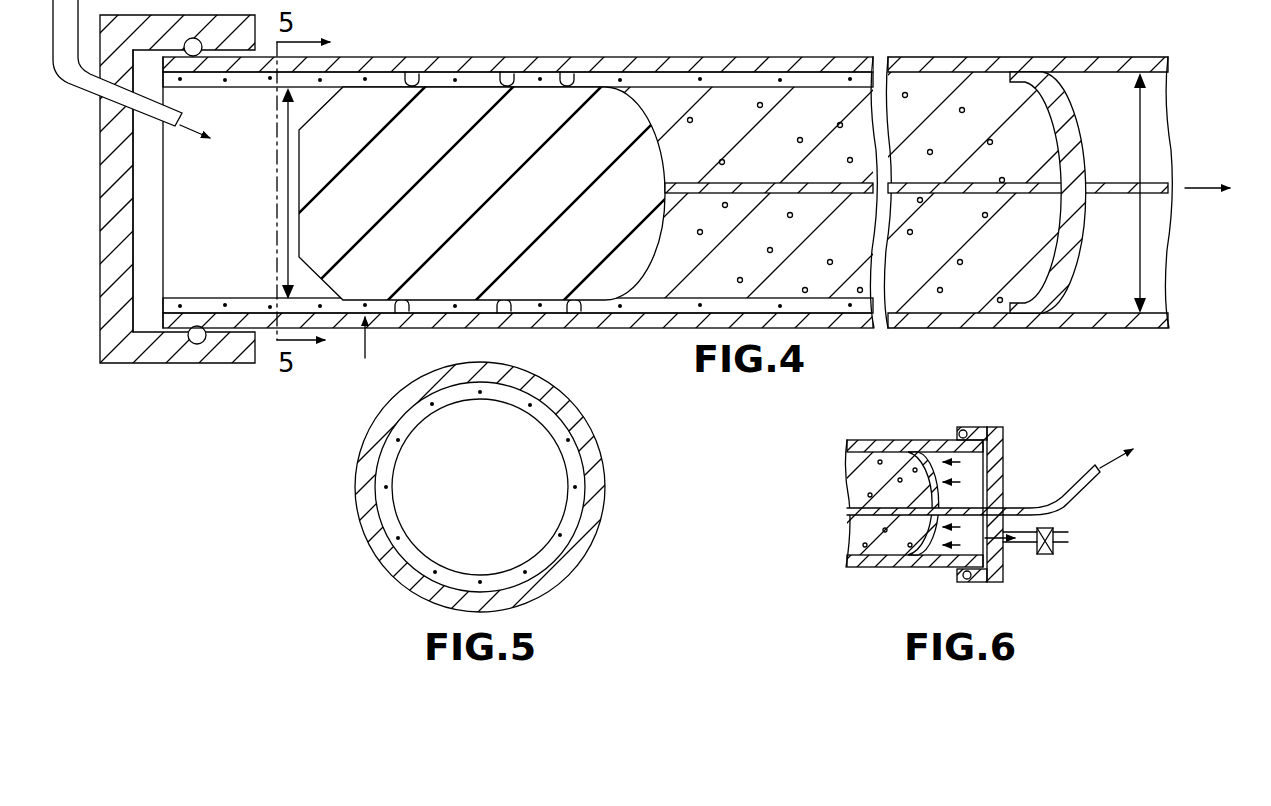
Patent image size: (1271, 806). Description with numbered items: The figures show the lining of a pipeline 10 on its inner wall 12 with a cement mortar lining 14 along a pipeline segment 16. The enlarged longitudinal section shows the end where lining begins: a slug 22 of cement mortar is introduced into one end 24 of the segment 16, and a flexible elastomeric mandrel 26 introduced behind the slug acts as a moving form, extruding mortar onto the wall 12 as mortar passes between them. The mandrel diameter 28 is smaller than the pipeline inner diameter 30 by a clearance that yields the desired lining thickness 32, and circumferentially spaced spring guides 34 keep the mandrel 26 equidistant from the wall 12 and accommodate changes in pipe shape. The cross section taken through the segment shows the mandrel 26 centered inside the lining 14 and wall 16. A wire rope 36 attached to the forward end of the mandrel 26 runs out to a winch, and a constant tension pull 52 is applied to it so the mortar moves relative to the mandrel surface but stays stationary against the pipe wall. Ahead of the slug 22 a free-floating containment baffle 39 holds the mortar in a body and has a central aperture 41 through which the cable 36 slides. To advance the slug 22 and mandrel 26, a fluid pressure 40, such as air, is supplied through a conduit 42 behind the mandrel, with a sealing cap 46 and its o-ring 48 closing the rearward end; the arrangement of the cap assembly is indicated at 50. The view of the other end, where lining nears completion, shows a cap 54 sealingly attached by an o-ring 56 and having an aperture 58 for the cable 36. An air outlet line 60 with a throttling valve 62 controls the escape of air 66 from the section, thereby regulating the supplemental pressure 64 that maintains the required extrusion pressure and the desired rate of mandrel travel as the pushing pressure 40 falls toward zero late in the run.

In FIG. 4, the pipeline 10 is at (608, 42).
In FIG. 5, the pipeline 10 is at (655, 525).
In FIG. 4, the inner wall 12 is at (1110, 75).
In FIG. 4, the cement mortar lining 14 is at (205, 78).
In FIG. 5, the cement mortar lining 14 is at (575, 458).
In FIG. 4, the pipeline segment 16 is at (980, 65).
In FIG. 5, the pipeline segment 16 is at (560, 405).
In FIG. 6, the pipeline segment 16 is at (868, 440).
In FIG. 4, the slug of cement mortar 22 is at (807, 90).
In FIG. 6, the slug of cement mortar 22 is at (845, 475).
In FIG. 4, the end of the segment 24 is at (158, 322).
In FIG. 4, the flexible mandrel 26 is at (480, 48).
In FIG. 5, the flexible mandrel 26 is at (498, 496).
In FIG. 4, the mandrel diameter 28 is at (313, 118).
In FIG. 4, the pipeline inner diameter 30 is at (1145, 118).
In FIG. 4, the lining thickness 32 is at (368, 348).
In FIG. 4, the spring guides 34 is at (423, 78).
In FIG. 4, the wire rope 36 is at (938, 180).
In FIG. 6, the wire rope 36 is at (1085, 490).
In FIG. 4, the containment baffle 39 is at (1074, 284).
In FIG. 6, the containment baffle 39 is at (925, 452).
In FIG. 4, the pressure 40 is at (180, 135).
In FIG. 4, the aperture 41 is at (1088, 186).
In FIG. 4, the conduit 42 is at (60, 80).
In FIG. 4, the sealing cap 46 is at (223, 356).
In FIG. 4, the o-ring 48 is at (196, 345).
In FIG. 4, the end cap assembly 50 is at (635, 210).
In FIG. 4, the constant tension pull 52 is at (1200, 195).
In FIG. 6, the constant tension pull 52 is at (1103, 462).
In FIG. 6, the cap 54 is at (1003, 455).
In FIG. 6, the o-ring 56 is at (967, 428).
In FIG. 6, the aperture 58 is at (1003, 525).
In FIG. 6, the air outlet line 60 is at (1048, 556).
In FIG. 6, the throttling valve 62 is at (1068, 538).
In FIG. 6, the supplemental pressure 64 is at (950, 548).
In FIG. 6, the escape of air 66 is at (988, 580).